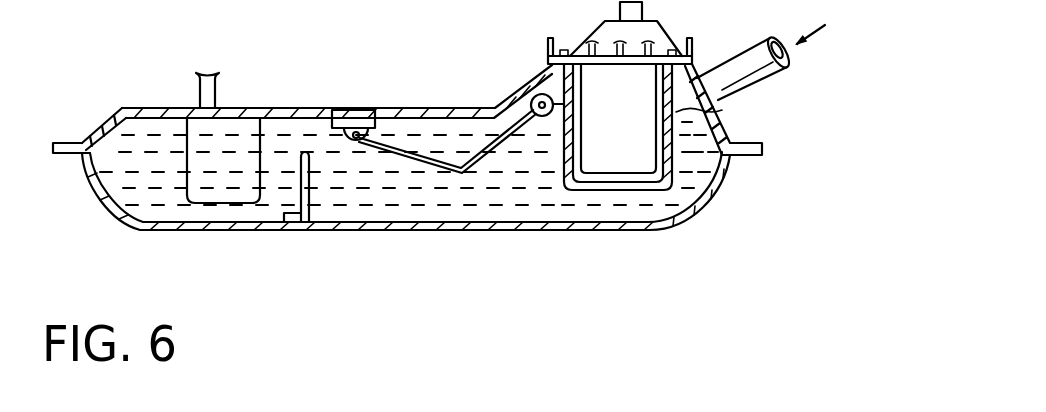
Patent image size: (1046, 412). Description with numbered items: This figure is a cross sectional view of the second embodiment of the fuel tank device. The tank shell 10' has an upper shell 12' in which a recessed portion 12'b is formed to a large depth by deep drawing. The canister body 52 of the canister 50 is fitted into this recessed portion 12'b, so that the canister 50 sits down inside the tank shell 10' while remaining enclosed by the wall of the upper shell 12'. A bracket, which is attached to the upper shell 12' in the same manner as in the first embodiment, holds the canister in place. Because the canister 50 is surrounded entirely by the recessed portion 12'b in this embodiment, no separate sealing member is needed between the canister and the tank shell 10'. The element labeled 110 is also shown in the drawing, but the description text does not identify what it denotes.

The tank shell 10' is at (483, 151).
The upper shell 12' is at (328, 60).
The recessed portion 12'b is at (422, 211).
The canister 50 is at (598, 178).
The canister body 52 is at (657, 143).
The reservoir bottom inlet 110 is at (578, 157).